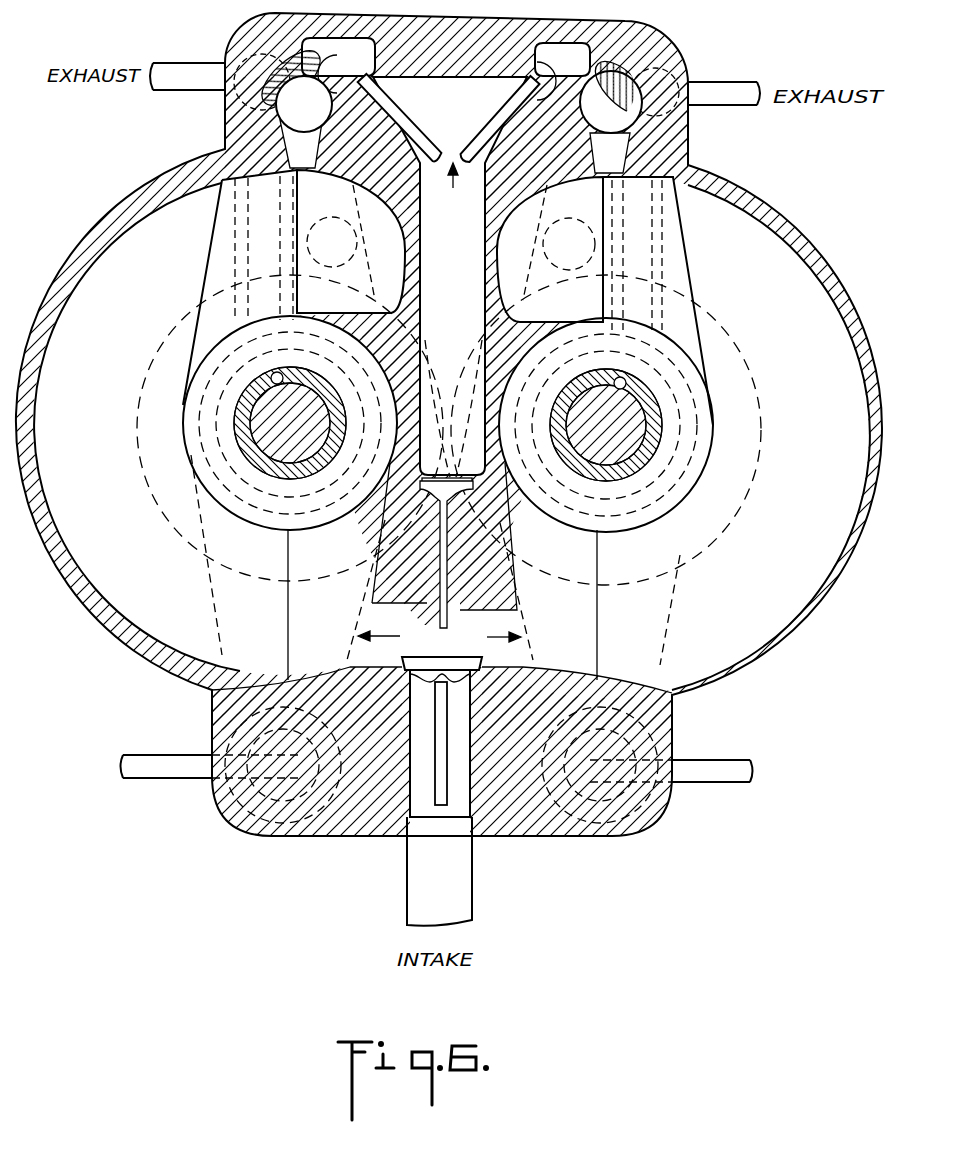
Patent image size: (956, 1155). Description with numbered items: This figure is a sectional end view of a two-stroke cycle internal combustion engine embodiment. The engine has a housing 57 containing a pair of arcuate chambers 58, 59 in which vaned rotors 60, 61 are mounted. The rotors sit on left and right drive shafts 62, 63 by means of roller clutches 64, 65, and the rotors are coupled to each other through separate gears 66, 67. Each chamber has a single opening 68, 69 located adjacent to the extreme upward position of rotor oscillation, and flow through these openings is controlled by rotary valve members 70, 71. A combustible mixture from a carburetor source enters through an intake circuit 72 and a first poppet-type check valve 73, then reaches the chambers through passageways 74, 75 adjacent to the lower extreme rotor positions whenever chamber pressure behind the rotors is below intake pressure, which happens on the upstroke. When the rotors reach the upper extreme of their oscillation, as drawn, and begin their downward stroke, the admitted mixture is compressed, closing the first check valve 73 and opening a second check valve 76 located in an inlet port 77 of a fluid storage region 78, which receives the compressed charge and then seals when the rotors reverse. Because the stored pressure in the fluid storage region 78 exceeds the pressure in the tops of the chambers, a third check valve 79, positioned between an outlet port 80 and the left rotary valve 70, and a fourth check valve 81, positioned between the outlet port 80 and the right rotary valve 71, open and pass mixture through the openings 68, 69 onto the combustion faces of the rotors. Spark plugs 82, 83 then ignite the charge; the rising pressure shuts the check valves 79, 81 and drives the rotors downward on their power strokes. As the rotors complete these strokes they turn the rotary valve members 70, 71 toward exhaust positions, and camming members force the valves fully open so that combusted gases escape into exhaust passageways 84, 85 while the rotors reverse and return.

The housing 57 is at (95, 221).
The arcuate chamber 58 is at (98, 360).
The arcuate chamber 59 is at (822, 435).
The vaned rotor 60 is at (215, 256).
The vaned rotor 61 is at (678, 255).
The left drive shaft 62 is at (300, 421).
The right drive shaft 63 is at (619, 426).
The roller clutch 64 is at (268, 467).
The roller clutch 65 is at (622, 470).
The gear 66 is at (152, 503).
The gear 67 is at (748, 503).
The opening 68 is at (305, 172).
The opening 69 is at (600, 175).
The rotary valve member 70 is at (314, 103).
The rotary valve member 71 is at (596, 108).
The intake circuit 72 is at (455, 882).
The first poppet-type check valve 73 is at (427, 680).
The passageway 74 is at (309, 567).
The passageway 75 is at (570, 601).
The second check valve 76 is at (442, 482).
The inlet port 77 is at (470, 470).
The fluid storage region 78 is at (468, 291).
The third check valve 79 is at (384, 75).
The outlet port 80 is at (455, 187).
The fourth check valve 81 is at (540, 80).
The spark plug 82 is at (332, 267).
The spark plug 83 is at (570, 270).
The exhaust passageway 84 is at (196, 62).
The exhaust passageway 85 is at (718, 82).